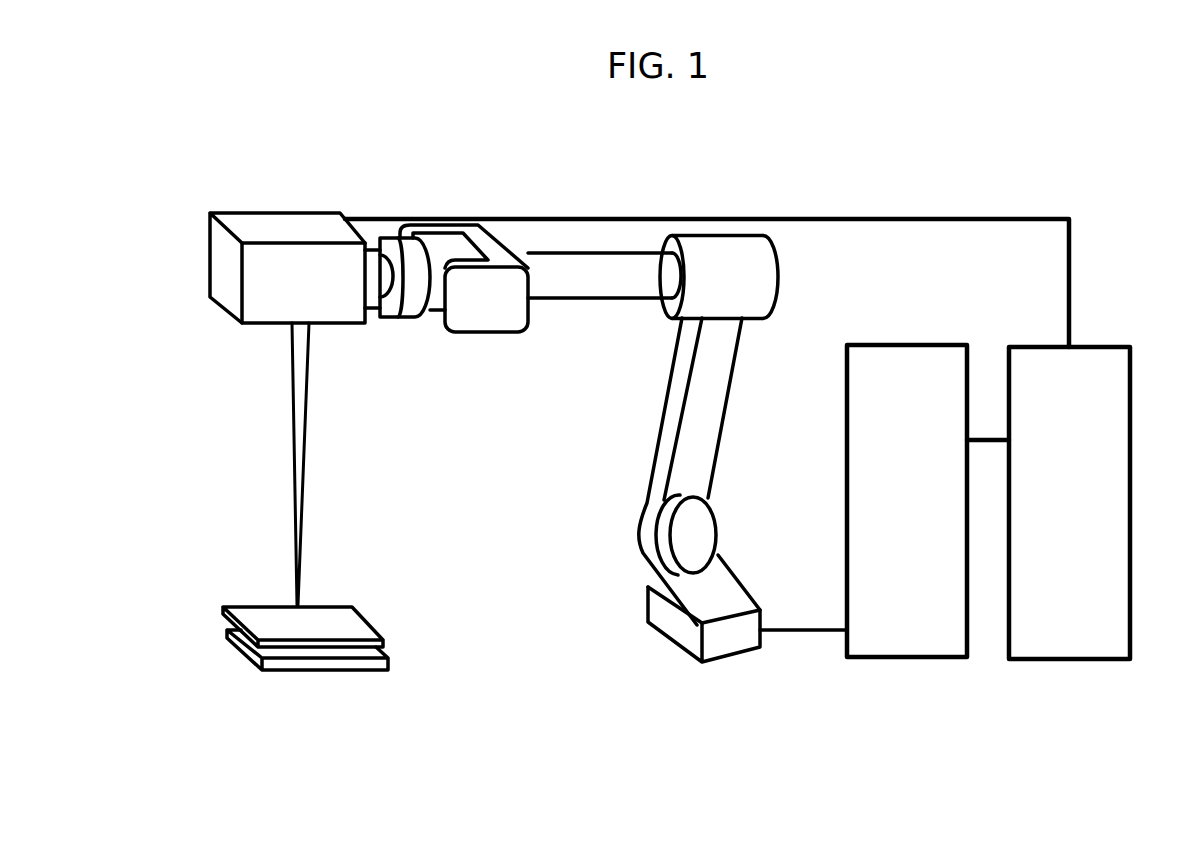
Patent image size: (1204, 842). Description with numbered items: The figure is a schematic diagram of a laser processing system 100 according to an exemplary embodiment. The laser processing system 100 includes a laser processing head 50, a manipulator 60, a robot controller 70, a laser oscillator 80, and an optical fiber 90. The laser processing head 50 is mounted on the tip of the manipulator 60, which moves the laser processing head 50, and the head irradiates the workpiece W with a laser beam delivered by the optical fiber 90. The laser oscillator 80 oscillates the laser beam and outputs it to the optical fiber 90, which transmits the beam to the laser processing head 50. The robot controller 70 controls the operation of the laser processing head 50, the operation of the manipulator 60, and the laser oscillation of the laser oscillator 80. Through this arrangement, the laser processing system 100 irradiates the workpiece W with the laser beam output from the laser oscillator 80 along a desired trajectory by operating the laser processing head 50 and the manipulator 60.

The laser processing head 50 is at (285, 225).
The manipulator 60 is at (640, 433).
The robot controller 70 is at (916, 642).
The laser oscillator 80 is at (1070, 642).
The optical fiber 90 is at (605, 219).
The workpiece W is at (350, 675).
The laser processing system 100 is at (670, 486).